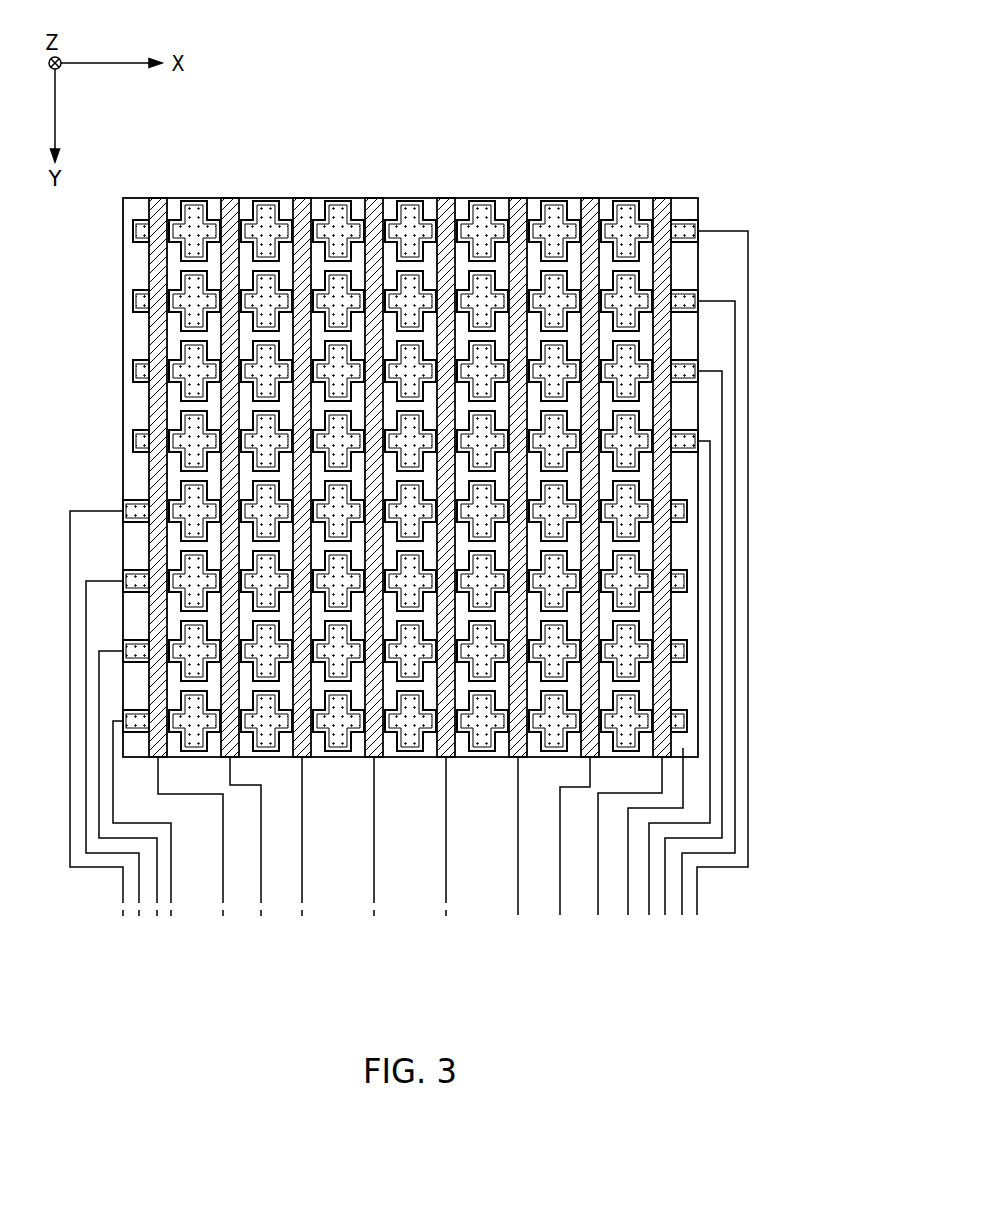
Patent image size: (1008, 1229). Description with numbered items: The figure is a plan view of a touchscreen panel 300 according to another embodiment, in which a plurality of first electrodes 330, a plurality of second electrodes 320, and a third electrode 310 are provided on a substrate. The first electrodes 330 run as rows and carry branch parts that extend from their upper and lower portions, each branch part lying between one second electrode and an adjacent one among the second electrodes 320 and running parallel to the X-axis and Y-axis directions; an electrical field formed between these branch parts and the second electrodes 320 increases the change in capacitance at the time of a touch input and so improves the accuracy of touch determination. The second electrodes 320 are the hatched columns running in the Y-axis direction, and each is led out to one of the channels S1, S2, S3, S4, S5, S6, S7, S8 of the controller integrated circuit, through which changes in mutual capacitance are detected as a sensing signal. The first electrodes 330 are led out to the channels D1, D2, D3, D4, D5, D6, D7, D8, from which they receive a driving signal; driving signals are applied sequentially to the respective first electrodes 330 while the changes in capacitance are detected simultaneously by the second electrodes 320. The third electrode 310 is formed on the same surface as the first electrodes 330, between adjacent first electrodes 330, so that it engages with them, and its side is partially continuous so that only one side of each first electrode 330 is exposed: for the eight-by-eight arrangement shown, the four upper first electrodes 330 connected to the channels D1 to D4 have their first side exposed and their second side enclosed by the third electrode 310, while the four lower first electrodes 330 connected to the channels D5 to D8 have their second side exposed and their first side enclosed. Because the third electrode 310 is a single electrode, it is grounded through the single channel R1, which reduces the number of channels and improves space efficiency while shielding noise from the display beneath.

The touchscreen panel 300 is at (648, 112).
The third electrode 310 is at (133, 208).
The second electrodes 320 is at (158, 198).
The first electrodes 330 is at (143, 233).
The channel S1 is at (223, 902).
The channel S2 is at (261, 902).
The channel S3 is at (302, 902).
The channel S4 is at (374, 895).
The channel S5 is at (446, 895).
The channel S6 is at (518, 895).
The channel S7 is at (560, 895).
The channel S8 is at (598, 895).
The channel D1 is at (697, 895).
The channel D2 is at (682, 895).
The channel D3 is at (665, 895).
The channel D4 is at (649, 895).
The channel D5 is at (122, 902).
The channel D6 is at (139, 902).
The channel D7 is at (157, 902).
The channel D8 is at (171, 902).
The channel R1 is at (628, 895).